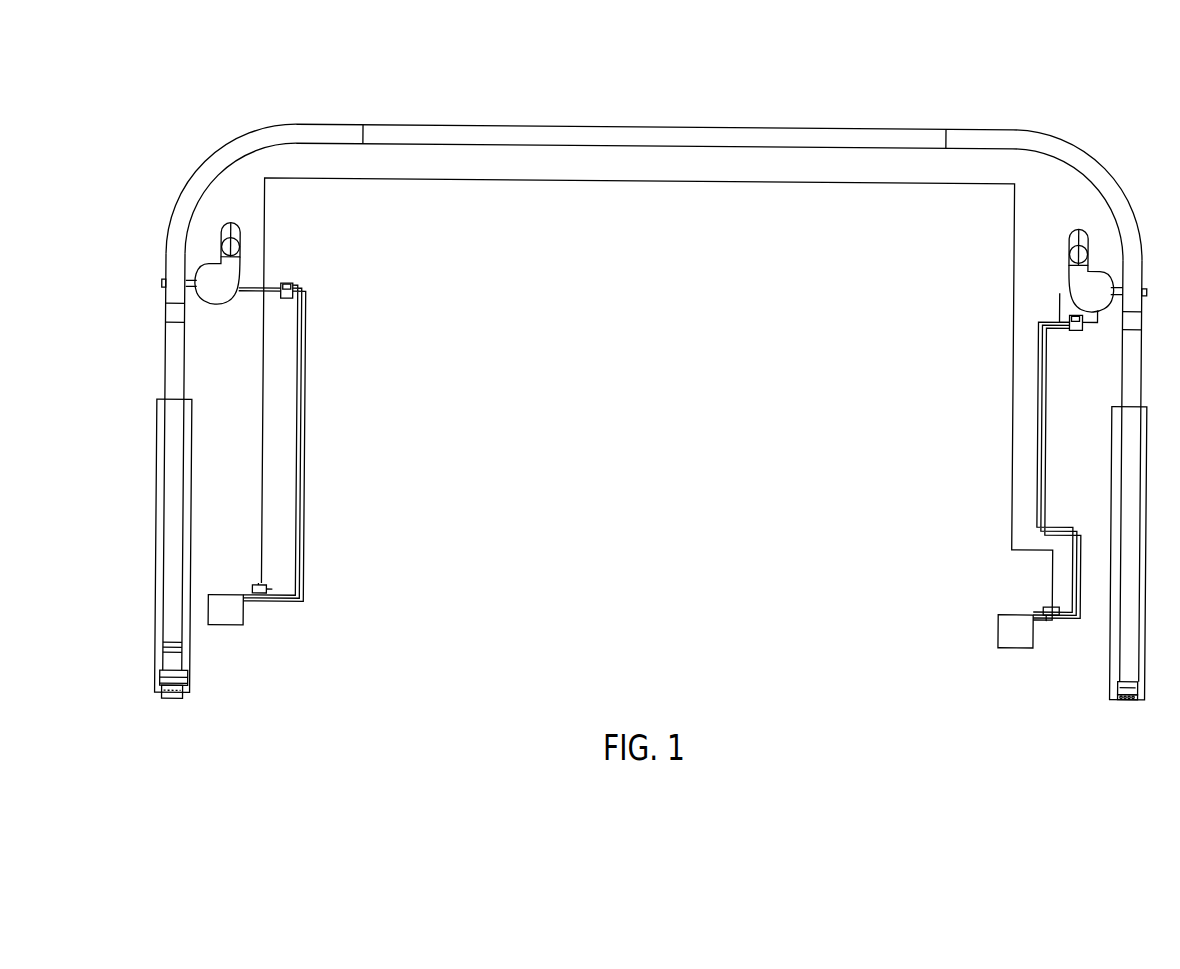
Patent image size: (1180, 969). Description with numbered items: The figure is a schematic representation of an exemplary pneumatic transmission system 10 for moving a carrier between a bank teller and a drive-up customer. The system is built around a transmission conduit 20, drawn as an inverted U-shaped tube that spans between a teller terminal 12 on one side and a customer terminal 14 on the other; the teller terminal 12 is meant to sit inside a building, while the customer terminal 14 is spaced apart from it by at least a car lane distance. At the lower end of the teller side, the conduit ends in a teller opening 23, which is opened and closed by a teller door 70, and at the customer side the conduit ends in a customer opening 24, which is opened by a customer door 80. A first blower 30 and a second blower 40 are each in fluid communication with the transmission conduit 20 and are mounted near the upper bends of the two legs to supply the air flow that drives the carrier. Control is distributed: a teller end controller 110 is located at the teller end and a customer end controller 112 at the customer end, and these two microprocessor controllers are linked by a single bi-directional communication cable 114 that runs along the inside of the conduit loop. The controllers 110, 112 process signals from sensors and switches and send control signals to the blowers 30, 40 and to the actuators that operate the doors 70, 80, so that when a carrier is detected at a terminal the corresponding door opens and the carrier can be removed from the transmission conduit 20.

The pneumatic transmission system 10 is at (502, 108).
The transmission conduit 20 is at (826, 126).
The teller terminal 12 is at (208, 548).
The customer terminal 14 is at (1102, 684).
The first blower 30 is at (241, 276).
The second blower 40 is at (1073, 277).
The bi-directional communication cable 114 is at (521, 193).
The teller end controller 110 is at (237, 638).
The customer end controller 112 is at (999, 630).
The teller door 70 is at (180, 704).
The customer door 80 is at (1127, 698).
The teller opening 23 is at (177, 716).
The customer opening 24 is at (1137, 709).